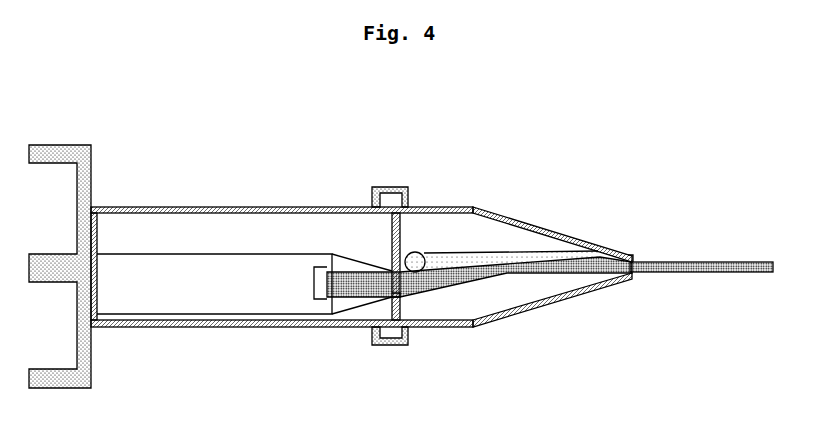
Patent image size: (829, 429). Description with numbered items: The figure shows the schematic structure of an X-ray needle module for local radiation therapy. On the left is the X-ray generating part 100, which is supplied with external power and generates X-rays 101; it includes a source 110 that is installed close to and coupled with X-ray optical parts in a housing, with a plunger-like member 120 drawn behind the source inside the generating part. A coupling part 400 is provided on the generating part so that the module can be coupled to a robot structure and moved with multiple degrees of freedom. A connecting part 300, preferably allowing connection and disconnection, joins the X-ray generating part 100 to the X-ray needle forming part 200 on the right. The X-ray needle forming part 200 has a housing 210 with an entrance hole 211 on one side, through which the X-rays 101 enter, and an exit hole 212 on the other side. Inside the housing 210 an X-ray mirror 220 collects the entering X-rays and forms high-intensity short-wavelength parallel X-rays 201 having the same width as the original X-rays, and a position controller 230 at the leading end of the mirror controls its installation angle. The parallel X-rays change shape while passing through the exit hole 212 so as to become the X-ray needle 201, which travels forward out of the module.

The coupling part 400 is at (97, 157).
The X-ray generating part 100 is at (213, 207).
The plunger 120 is at (259, 254).
The source 110 is at (317, 267).
The X-rays 101 is at (428, 277).
The entrance hole 211 is at (399, 297).
The connecting part 300 is at (405, 196).
The position controller 230 is at (410, 256).
The X-ray mirror 220 is at (502, 251).
The housing 210 is at (555, 227).
The X-ray needle forming part 200 is at (536, 225).
The exit hole 212 is at (633, 256).
The parallel X-rays (X-ray needle) 201 is at (667, 273).